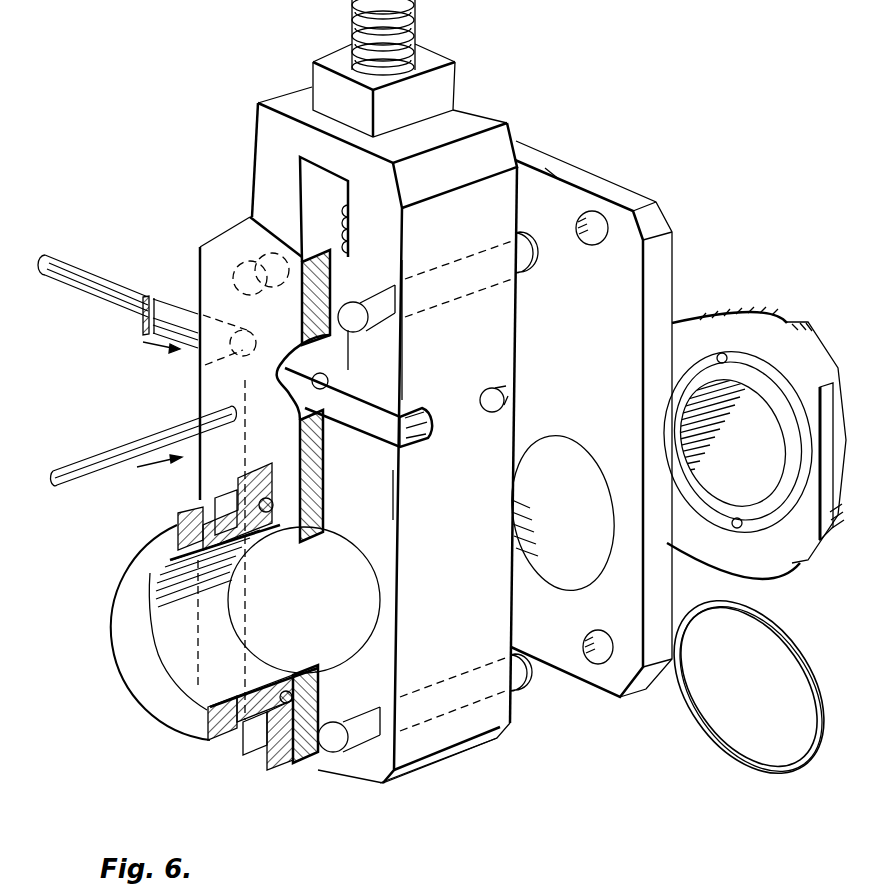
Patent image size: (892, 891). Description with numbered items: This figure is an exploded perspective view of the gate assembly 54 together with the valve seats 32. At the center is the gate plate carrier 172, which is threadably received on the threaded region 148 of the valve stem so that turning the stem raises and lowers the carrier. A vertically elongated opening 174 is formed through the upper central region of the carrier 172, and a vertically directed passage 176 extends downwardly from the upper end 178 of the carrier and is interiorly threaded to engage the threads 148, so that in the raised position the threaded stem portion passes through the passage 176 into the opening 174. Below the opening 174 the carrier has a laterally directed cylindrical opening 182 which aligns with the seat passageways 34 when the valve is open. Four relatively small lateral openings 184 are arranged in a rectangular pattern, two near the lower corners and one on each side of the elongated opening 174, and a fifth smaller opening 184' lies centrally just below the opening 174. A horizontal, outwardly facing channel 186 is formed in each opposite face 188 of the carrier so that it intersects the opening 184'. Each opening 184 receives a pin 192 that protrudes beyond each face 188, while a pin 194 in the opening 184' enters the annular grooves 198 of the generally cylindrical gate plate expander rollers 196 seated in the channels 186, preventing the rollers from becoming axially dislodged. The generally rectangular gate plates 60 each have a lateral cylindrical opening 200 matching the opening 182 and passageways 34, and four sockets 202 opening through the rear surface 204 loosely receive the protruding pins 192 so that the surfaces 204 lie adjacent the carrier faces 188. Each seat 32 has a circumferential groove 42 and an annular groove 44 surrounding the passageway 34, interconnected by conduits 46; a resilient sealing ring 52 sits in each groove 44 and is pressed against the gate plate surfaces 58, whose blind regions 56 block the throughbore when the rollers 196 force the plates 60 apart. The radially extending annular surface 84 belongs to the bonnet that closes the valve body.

The seat 32 is at (783, 292).
The passageway 34 is at (753, 472).
The groove 42 is at (195, 507).
The annular groove 44 is at (715, 517).
The conduits 46 is at (722, 353).
The sealing ring 52 is at (274, 505).
The gate assembly 54 is at (545, 92).
The blind regions 56 is at (282, 431).
The surfaces 58 is at (208, 397).
The gate plates 60 is at (605, 188).
The annular surface 84 is at (380, 747).
The threaded region 148 is at (404, 40).
The gate plate carrier 172 is at (470, 545).
The vertically elongated opening 174 is at (312, 184).
The passage 176 is at (366, 90).
The upper end 178 is at (330, 60).
The cylindrical opening 182 is at (375, 622).
The openings 184 is at (289, 290).
The opening 184' is at (358, 404).
The channels 186 is at (507, 383).
The face 188 is at (387, 493).
The pin 192 is at (320, 786).
The pin 194 is at (133, 448).
The gate plate expander roller 196 is at (147, 255).
The grooves 198 is at (146, 325).
The cylindrical opening 200 is at (597, 545).
The sockets 202 is at (593, 243).
The surface 204 is at (540, 177).